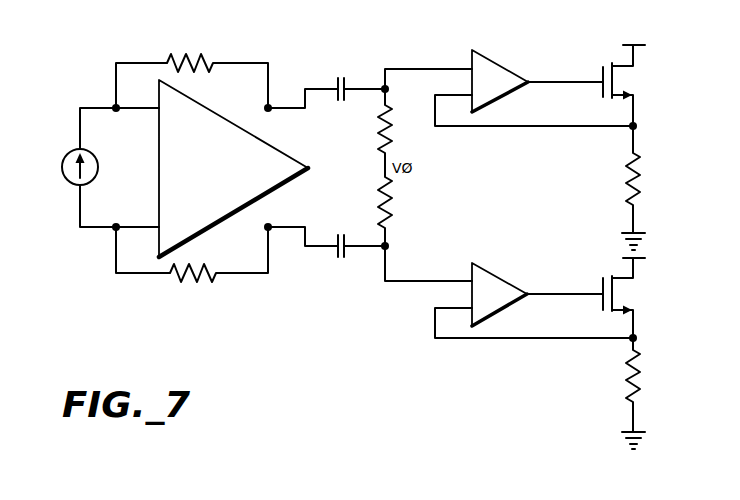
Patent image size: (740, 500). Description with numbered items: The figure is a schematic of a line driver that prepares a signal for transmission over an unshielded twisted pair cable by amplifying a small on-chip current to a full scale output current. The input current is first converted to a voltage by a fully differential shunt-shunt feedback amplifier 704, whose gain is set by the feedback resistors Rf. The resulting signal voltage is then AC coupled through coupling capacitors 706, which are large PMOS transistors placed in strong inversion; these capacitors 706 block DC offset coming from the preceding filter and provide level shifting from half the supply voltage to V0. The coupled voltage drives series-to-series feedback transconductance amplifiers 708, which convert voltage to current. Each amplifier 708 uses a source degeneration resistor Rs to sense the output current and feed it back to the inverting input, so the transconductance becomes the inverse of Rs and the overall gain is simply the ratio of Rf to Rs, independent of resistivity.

The shunt-shunt feedback amplifier 704 is at (238, 52).
The coupling capacitors 706 is at (341, 68).
The transconductance amplifiers 708 is at (536, 46).